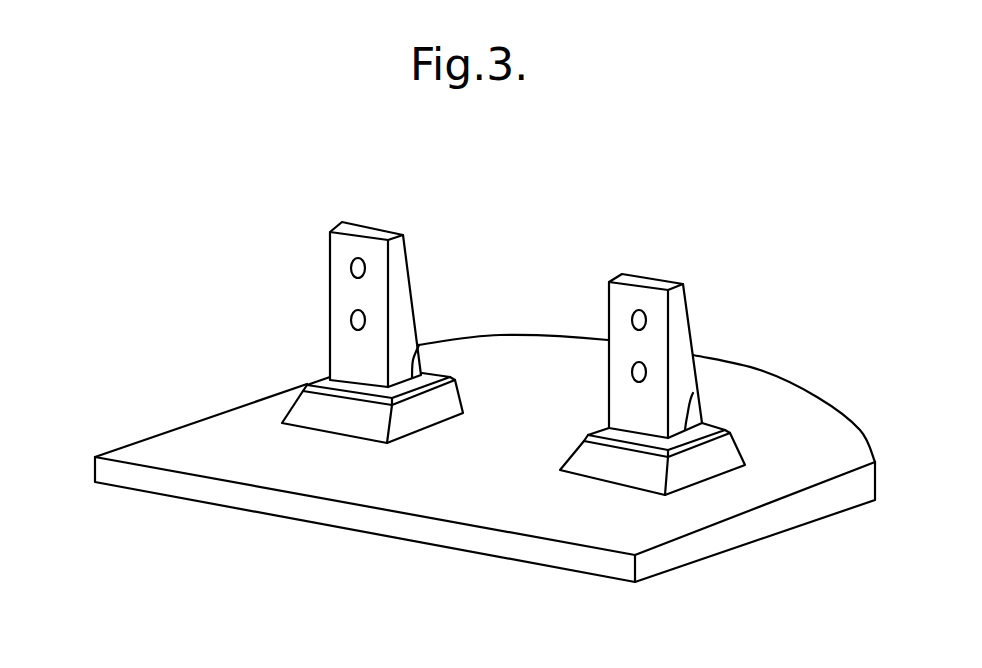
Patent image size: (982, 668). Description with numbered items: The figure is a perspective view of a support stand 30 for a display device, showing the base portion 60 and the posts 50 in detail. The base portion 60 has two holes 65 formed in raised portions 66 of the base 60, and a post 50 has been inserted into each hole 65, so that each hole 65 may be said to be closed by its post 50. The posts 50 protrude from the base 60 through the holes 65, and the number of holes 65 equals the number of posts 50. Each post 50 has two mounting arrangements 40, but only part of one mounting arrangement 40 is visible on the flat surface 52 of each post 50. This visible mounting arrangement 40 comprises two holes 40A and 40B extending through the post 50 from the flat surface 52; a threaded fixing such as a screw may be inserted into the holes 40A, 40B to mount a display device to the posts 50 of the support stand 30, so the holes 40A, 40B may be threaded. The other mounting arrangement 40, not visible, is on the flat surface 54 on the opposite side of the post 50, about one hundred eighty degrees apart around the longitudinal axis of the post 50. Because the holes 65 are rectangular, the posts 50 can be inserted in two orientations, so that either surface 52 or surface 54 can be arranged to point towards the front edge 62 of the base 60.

The support stand 30 is at (137, 288).
The mounting arrangement 40 is at (257, 320).
The hole 40A is at (350, 269).
The hole 40B is at (351, 320).
The post 50 is at (398, 305).
The flat surface 52 is at (352, 352).
The flat surface 54 is at (420, 270).
The base portion 60 is at (612, 517).
The front edge 62 is at (355, 515).
The hole 65 is at (420, 343).
The raised portion 66 is at (443, 407).